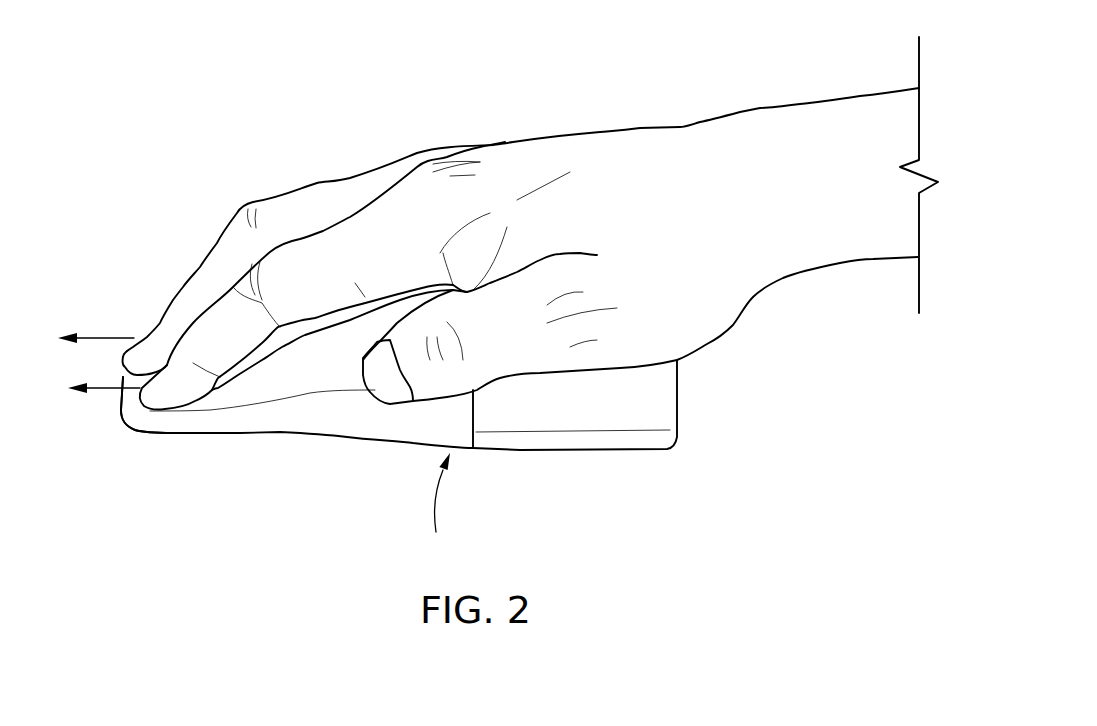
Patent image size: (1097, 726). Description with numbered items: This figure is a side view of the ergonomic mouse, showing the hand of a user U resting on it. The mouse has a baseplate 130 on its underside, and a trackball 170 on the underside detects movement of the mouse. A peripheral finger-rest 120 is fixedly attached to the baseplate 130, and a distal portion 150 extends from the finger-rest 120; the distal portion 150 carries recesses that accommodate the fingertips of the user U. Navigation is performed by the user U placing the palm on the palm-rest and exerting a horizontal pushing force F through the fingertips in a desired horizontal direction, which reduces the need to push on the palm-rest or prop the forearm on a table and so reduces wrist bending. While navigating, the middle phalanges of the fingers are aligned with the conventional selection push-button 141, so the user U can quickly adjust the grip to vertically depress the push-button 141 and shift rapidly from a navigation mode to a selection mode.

The peripheral finger-rest 120 is at (337, 400).
The baseplate 130 is at (677, 438).
The push-button 141 is at (285, 333).
The distal portion 150 is at (145, 416).
The trackball 170 is at (443, 507).
The user u is at (869, 113).
The horizontal pushing force F is at (93, 337).